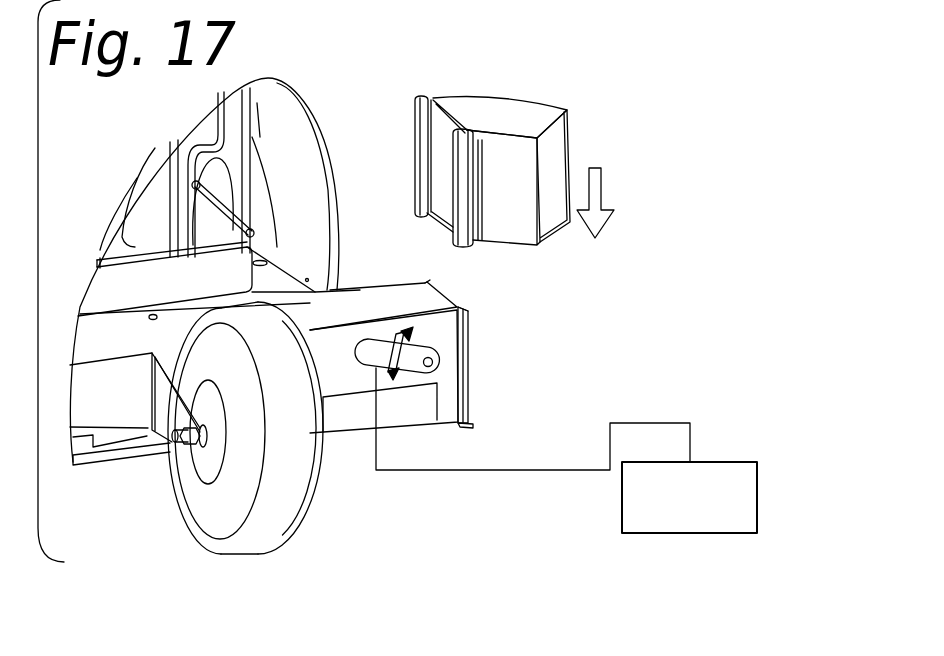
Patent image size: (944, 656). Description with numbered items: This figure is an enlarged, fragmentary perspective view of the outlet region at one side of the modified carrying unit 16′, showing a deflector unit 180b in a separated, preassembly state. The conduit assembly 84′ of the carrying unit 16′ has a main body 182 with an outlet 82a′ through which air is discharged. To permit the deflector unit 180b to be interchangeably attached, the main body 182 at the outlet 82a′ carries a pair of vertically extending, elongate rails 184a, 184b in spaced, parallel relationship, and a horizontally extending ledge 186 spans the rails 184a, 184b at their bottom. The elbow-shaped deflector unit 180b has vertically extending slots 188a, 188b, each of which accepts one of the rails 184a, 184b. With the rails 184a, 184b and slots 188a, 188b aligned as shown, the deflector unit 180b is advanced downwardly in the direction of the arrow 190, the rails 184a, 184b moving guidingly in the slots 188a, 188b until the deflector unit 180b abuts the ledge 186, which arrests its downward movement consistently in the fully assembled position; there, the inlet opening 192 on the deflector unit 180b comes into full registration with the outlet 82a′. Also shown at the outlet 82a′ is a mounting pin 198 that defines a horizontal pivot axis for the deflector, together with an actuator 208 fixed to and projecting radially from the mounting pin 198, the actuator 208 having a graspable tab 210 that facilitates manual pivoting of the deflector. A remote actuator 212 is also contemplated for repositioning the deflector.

The carrying unit 16′ is at (328, 101).
The actuator 208 is at (372, 358).
The conduit assembly 84′ is at (345, 433).
The main body 182 is at (398, 297).
The rail 184a is at (429, 279).
The rail 184b is at (469, 337).
The outlet 82a′ is at (463, 303).
The ledge 186 is at (474, 425).
The graspable tab 210 is at (370, 349).
The mounting pin 198 is at (434, 363).
The remote actuator 212 is at (702, 525).
The deflector unit 180b is at (470, 110).
The inlet opening 192 is at (440, 147).
The slot 188a is at (433, 98).
The slot 188b is at (467, 128).
The arrow 190 is at (602, 170).